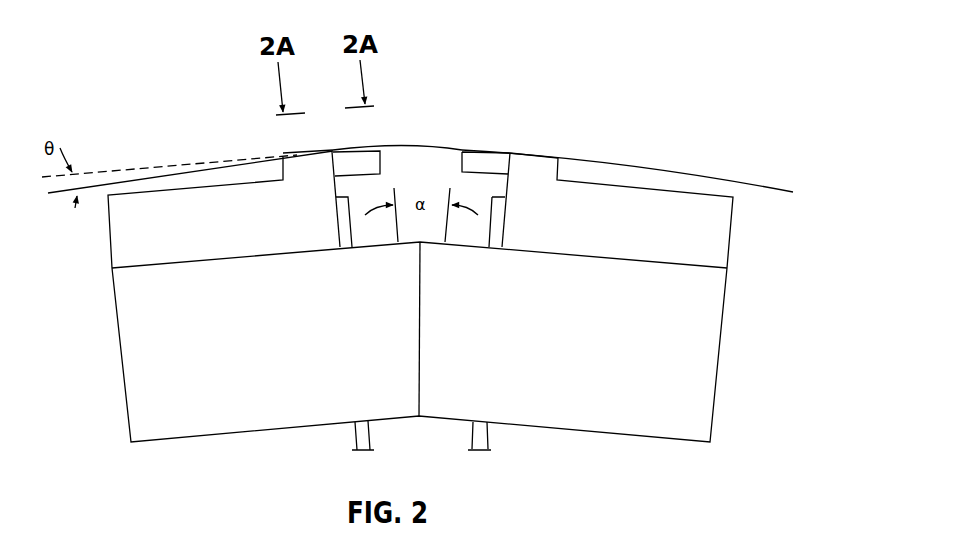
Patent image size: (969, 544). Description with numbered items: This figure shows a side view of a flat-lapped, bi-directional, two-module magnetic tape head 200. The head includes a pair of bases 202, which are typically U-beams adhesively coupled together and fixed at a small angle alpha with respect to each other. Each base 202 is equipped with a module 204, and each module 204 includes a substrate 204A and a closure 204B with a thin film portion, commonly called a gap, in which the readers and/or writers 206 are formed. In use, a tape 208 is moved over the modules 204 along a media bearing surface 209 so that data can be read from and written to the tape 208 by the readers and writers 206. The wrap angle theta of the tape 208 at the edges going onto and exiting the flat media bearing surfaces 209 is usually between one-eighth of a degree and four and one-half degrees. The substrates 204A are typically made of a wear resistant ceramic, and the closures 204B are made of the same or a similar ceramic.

The magnetic tape head 200 is at (164, 115).
The base 202 is at (120, 330).
The module 204 is at (112, 240).
The substrate 204A is at (168, 217).
The closure 204B is at (462, 162).
The readers and/or writers 206 is at (332, 147).
The tape 208 is at (650, 168).
The media bearing surface 209 is at (289, 147).